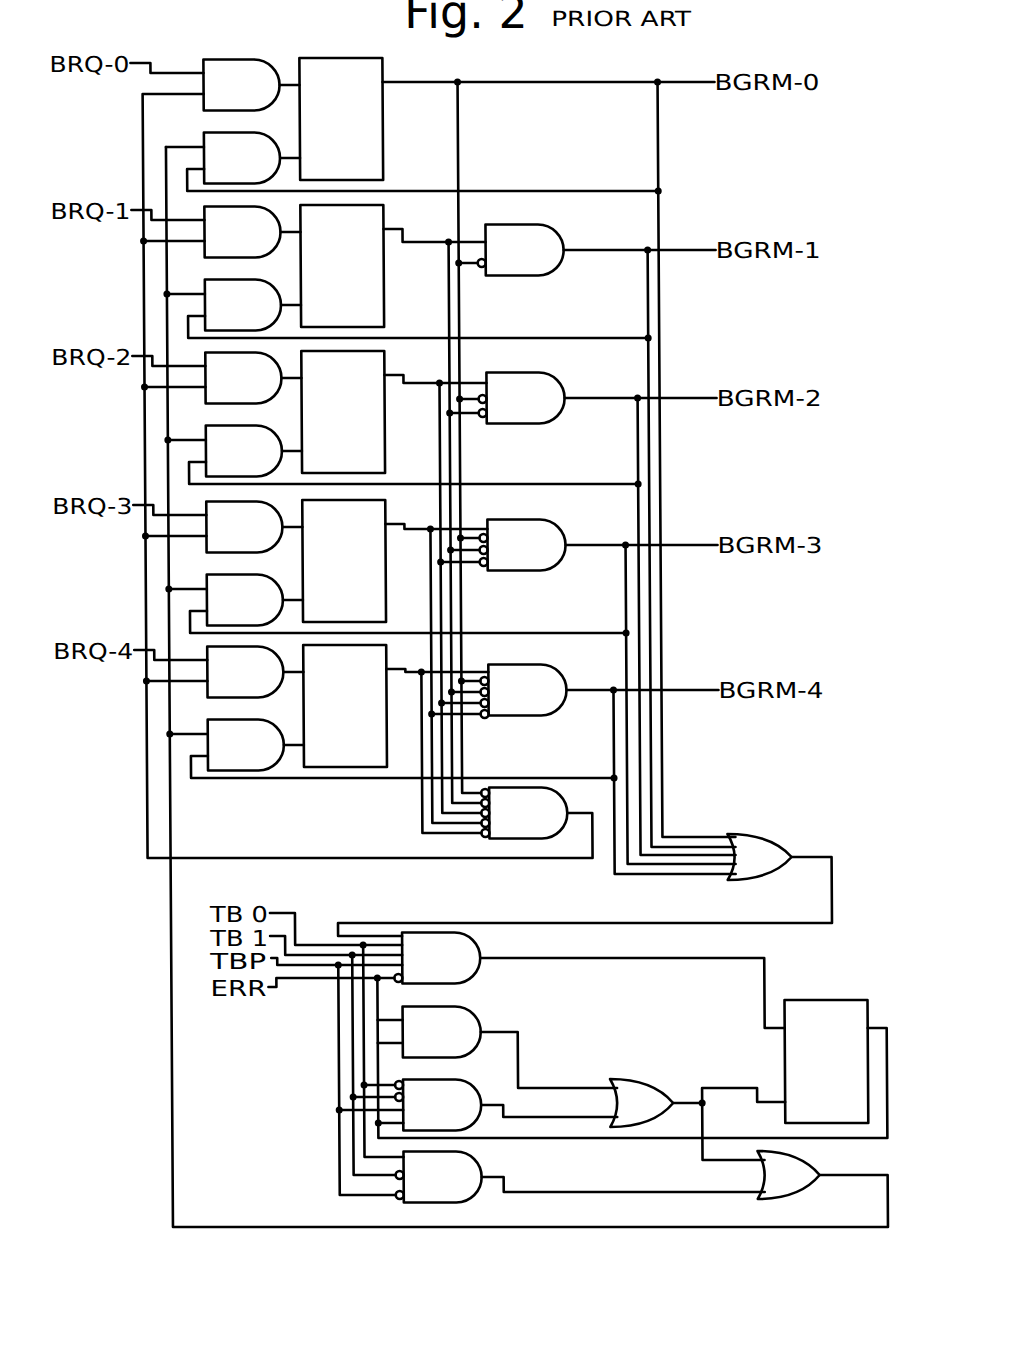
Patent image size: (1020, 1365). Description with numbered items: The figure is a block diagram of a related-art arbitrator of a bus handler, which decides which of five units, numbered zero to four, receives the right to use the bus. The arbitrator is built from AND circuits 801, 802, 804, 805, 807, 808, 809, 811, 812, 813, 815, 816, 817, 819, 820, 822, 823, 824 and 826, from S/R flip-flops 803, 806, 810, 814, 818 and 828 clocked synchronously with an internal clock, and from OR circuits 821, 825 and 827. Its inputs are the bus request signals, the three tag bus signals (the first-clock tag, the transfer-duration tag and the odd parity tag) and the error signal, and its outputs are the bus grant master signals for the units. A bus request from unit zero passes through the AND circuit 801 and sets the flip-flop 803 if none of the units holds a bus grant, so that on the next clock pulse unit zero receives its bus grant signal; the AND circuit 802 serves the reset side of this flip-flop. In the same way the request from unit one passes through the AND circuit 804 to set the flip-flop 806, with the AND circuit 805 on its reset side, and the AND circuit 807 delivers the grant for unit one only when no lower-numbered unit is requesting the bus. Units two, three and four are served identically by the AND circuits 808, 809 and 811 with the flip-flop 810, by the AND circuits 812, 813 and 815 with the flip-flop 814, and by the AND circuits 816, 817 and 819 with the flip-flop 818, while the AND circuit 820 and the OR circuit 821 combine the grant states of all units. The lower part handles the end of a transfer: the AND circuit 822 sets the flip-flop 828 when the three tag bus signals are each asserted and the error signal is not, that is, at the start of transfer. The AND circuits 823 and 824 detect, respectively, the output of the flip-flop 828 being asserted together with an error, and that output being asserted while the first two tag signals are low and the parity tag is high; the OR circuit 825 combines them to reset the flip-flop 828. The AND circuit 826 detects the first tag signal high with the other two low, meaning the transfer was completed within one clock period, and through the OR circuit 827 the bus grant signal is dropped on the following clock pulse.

The AND circuit 801 is at (241, 85).
The AND circuit 802 is at (242, 158).
The S/R flip-flop 803 is at (341, 119).
The AND circuit 804 is at (242, 232).
The AND circuit 805 is at (243, 305).
The S/R flip-flop 806 is at (342, 266).
The AND circuit 807 is at (520, 250).
The AND circuit 808 is at (243, 378).
The AND circuit 809 is at (244, 451).
The S/R flip-flop 810 is at (343, 412).
The AND circuit 811 is at (521, 398).
The AND circuit 812 is at (244, 527).
The AND circuit 813 is at (245, 600).
The S/R flip-flop 814 is at (344, 561).
The AND circuit 815 is at (522, 545).
The AND circuit 816 is at (245, 672).
The AND circuit 817 is at (246, 745).
The S/R flip-flop 818 is at (345, 706).
The AND circuit 819 is at (523, 692).
The AND circuit 820 is at (368, 476).
The OR circuit 821 is at (751, 882).
The AND circuit 822 is at (589, 981).
The AND circuit 823 is at (510, 1048).
The AND circuit 824 is at (506, 1105).
The OR circuit 825 is at (651, 1081).
The AND circuit 826 is at (579, 1177).
The OR circuit 827 is at (806, 1186).
The S/R flip-flop 828 is at (827, 1061).